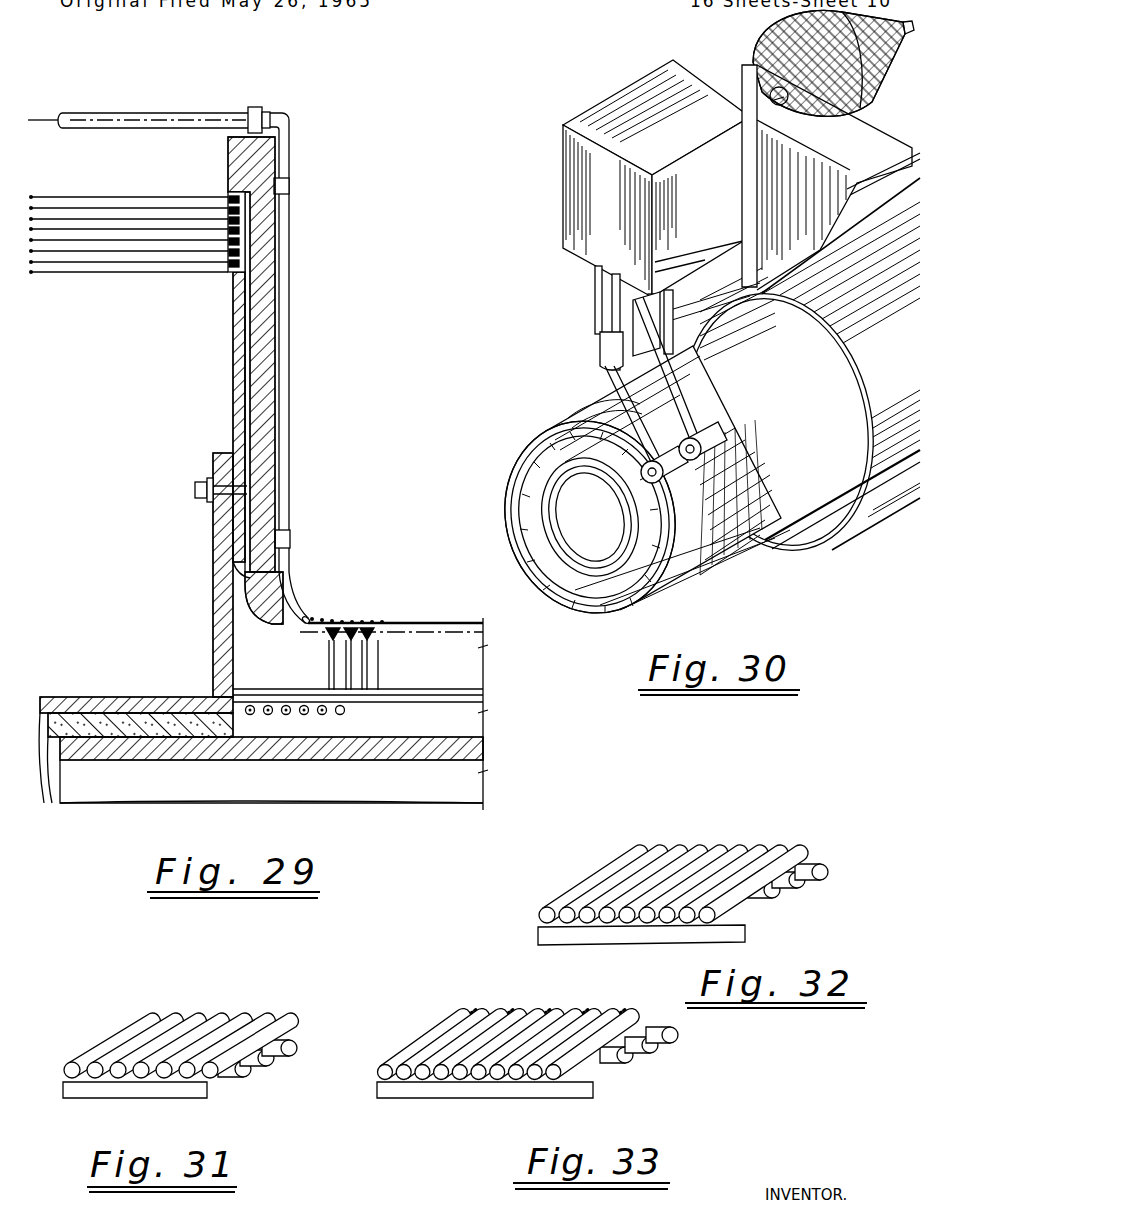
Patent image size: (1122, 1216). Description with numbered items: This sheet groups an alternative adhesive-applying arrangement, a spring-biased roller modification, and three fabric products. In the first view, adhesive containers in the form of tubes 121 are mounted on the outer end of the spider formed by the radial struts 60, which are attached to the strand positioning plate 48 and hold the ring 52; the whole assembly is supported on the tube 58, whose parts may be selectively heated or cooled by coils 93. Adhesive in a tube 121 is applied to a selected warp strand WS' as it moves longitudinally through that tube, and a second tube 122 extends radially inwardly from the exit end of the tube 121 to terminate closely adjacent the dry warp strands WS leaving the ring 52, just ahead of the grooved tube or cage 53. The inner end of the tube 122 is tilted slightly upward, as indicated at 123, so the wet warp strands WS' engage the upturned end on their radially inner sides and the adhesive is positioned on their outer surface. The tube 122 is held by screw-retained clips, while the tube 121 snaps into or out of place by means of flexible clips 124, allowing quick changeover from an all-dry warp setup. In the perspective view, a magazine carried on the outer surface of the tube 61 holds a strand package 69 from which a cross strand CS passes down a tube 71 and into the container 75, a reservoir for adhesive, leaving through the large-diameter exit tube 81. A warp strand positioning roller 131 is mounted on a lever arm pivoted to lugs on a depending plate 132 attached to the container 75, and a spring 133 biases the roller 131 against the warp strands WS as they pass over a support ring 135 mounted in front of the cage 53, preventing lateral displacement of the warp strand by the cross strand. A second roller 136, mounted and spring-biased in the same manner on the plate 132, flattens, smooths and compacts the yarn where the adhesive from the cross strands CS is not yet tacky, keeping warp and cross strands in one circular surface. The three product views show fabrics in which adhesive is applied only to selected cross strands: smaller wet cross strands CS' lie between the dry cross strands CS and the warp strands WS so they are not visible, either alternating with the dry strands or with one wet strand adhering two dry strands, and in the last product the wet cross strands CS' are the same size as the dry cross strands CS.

In FIG. 29, the wet warp strands WS' is at (60, 91).
In FIG. 29, the adhesive container tube 121 is at (136, 114).
In FIG. 29, the flexible clips 124 is at (256, 108).
In FIG. 29, the second tube 122 is at (290, 270).
In FIG. 29, the upturned inner end of tube 123 is at (310, 598).
In FIG. 29, the radial struts (spider) 60 is at (272, 352).
In FIG. 29, the strand positioning plate 48 is at (232, 348).
In FIG. 29, the ring 52 is at (248, 624).
In FIG. 29, the warp strands WS is at (175, 423).
In FIG. 30, the warp strands WS is at (568, 413).
In FIG. 31, the warp strands WS is at (175, 1108).
In FIG. 32, the warp strands WS is at (686, 941).
In FIG. 33, the warp strands WS is at (517, 1103).
In FIG. 29, the cylindrical tube or cage 53 is at (326, 656).
In FIG. 29, the heating or cooling coils 93 is at (305, 716).
In FIG. 29, the support tube 58 is at (484, 746).
In FIG. 30, the support tube 58 is at (566, 528).
In FIG. 30, the tube 61 is at (820, 560).
In FIG. 30, the strand package 69 is at (786, 44).
In FIG. 30, the tube 71 is at (768, 98).
In FIG. 30, the container (adhesive reservoir) 75 is at (544, 141).
In FIG. 30, the depending plate 132 is at (594, 304).
In FIG. 30, the exit tube 81 is at (636, 320).
In FIG. 30, the spring 133 is at (600, 350).
In FIG. 30, the warp strand positioning roller 131 is at (598, 404).
In FIG. 30, the second (pressure) roller 136 is at (708, 425).
In FIG. 30, the support ring 135 is at (514, 470).
In FIG. 30, the cross strands CS is at (737, 487).
In FIG. 31, the cross strands CS is at (191, 1029).
In FIG. 32, the cross strands CS is at (710, 865).
In FIG. 33, the cross strands CS is at (565, 1044).
In FIG. 31, the adhesive (wet) cross strands CS' is at (222, 1087).
In FIG. 32, the adhesive (wet) cross strands CS' is at (809, 896).
In FIG. 33, the adhesive (wet) cross strands CS' is at (541, 1022).